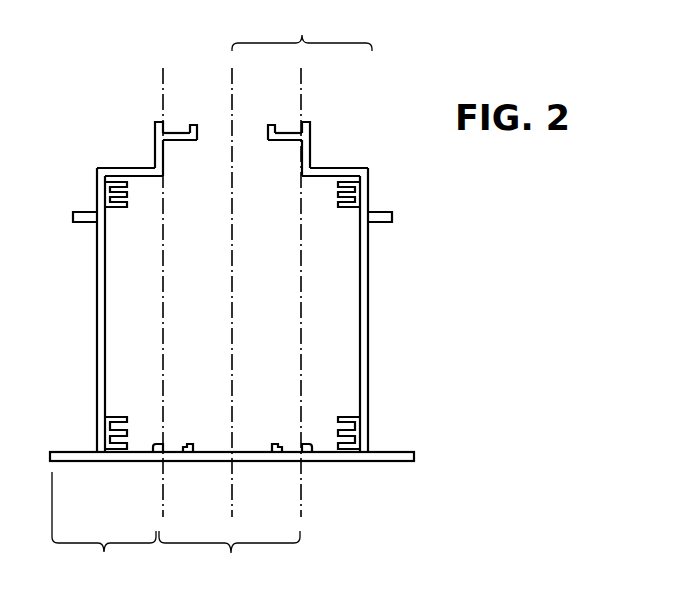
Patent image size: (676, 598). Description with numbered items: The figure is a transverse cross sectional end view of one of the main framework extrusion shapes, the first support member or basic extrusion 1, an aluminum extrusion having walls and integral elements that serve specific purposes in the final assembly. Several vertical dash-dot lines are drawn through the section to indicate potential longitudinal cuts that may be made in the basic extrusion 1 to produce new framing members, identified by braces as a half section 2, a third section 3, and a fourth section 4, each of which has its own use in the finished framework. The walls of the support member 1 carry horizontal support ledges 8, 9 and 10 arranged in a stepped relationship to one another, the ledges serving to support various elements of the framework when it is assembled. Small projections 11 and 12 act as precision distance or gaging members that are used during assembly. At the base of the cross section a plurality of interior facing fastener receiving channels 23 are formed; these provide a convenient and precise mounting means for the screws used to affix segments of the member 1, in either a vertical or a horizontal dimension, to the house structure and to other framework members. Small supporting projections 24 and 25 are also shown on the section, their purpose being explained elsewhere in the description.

The extrusion 1 is at (97, 282).
The half section 2 is at (302, 33).
The third section 3 is at (104, 523).
The fourth section 4 is at (229, 553).
The horizontal support ledge 8 is at (78, 211).
The horizontal support ledge 9 is at (108, 168).
The horizontal support ledge 10 is at (177, 133).
The gaging projection 11 is at (272, 125).
The gaging projection 12 is at (193, 445).
The fastener receiving channel 23 is at (128, 203).
The supporting projection 24 is at (155, 127).
The supporting projection 25 is at (153, 446).